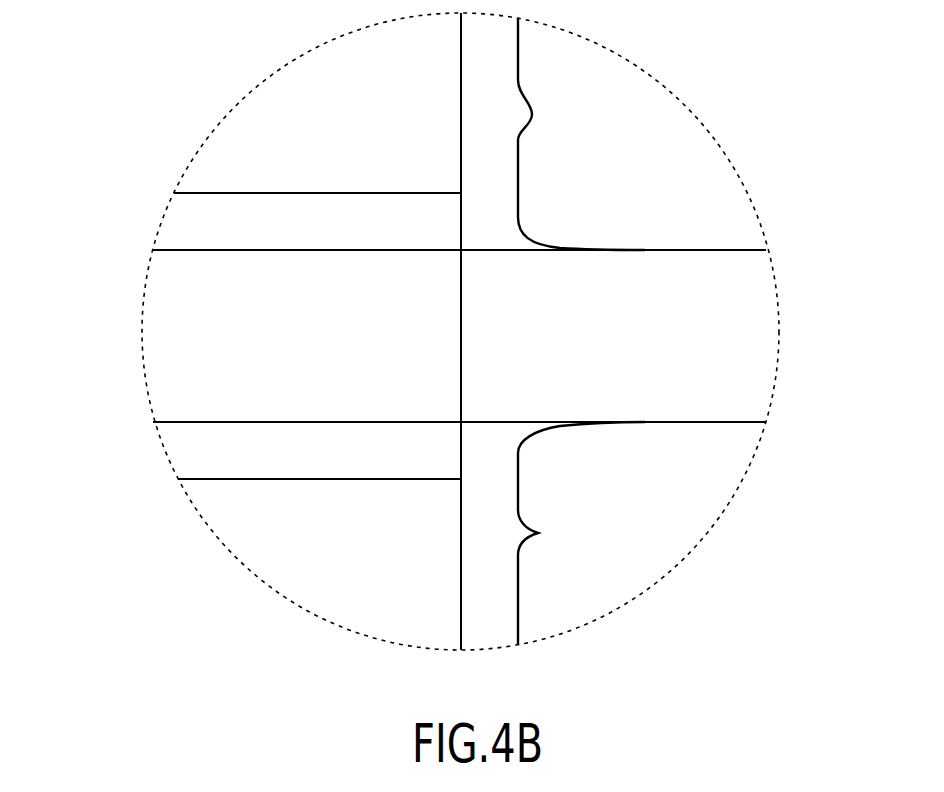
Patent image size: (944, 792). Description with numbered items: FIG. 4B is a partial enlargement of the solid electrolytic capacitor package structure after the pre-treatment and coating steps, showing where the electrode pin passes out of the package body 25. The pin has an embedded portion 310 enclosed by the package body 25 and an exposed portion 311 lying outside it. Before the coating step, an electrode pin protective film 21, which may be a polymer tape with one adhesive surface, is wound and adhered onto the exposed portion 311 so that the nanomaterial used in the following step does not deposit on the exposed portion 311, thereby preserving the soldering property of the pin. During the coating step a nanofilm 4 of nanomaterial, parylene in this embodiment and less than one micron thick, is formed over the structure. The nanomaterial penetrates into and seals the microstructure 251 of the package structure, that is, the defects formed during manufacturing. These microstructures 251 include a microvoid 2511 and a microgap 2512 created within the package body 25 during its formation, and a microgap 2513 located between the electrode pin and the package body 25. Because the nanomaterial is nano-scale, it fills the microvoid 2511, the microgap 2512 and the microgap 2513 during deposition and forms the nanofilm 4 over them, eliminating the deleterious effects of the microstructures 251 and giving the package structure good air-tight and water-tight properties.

The nanofilm 4 is at (452, 103).
The electrode pin protective film 21 is at (257, 217).
The package body 25 is at (597, 72).
The microstructure 251 is at (481, 320).
The microvoid 2511 is at (527, 125).
The microgap 2512 is at (562, 533).
The microgap 2513 is at (537, 237).
The embedded portion 310 is at (738, 313).
The exposed portion 311 is at (183, 312).